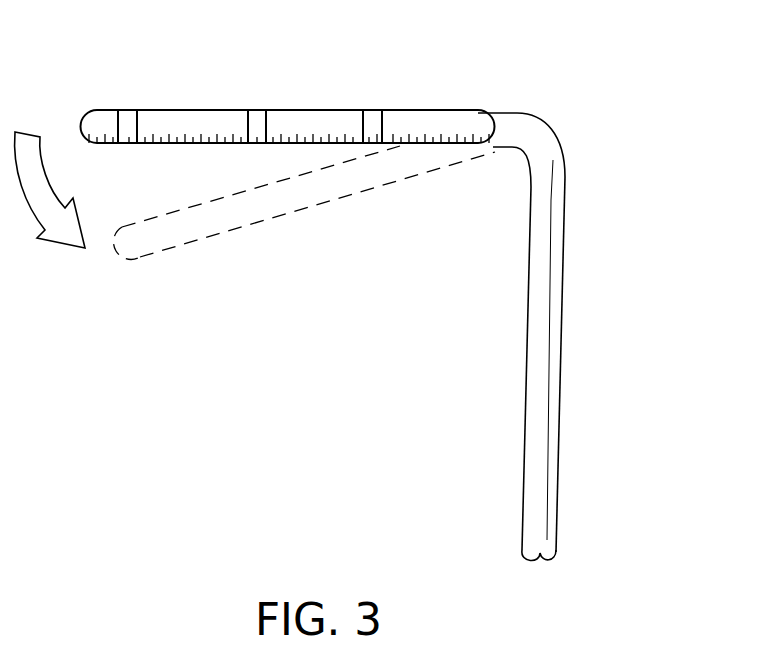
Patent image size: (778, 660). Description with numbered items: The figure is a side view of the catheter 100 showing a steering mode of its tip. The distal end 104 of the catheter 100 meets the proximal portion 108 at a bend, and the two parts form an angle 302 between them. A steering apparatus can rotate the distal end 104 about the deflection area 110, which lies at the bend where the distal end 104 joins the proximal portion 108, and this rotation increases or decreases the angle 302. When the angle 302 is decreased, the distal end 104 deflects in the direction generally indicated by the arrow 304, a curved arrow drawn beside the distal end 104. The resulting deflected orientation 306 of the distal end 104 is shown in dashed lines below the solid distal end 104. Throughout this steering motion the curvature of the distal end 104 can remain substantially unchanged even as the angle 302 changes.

The catheter 100 is at (315, 465).
The distal end 104 is at (272, 87).
The proximal portion 108 is at (520, 360).
The deflection area 110 is at (558, 102).
The angle 302 is at (530, 232).
The arrow 304 is at (41, 240).
The deflected orientation 306 is at (243, 220).